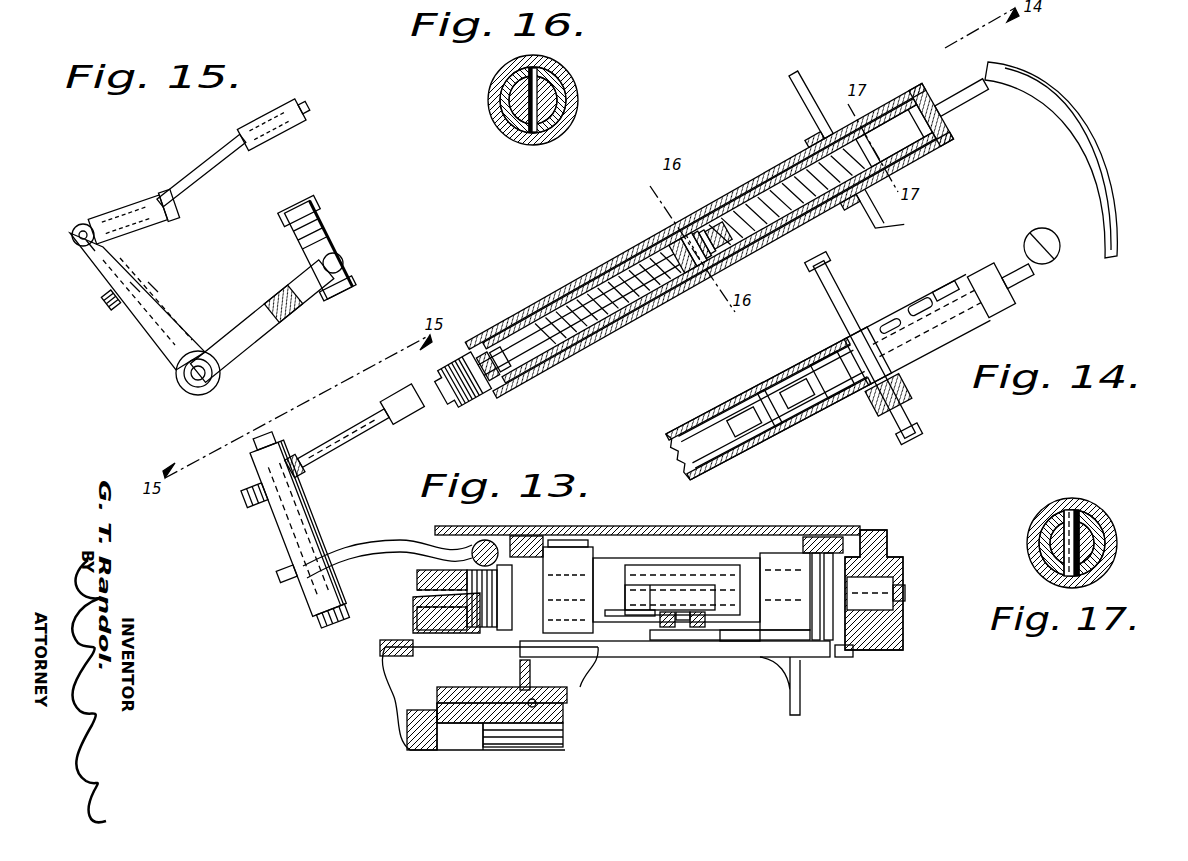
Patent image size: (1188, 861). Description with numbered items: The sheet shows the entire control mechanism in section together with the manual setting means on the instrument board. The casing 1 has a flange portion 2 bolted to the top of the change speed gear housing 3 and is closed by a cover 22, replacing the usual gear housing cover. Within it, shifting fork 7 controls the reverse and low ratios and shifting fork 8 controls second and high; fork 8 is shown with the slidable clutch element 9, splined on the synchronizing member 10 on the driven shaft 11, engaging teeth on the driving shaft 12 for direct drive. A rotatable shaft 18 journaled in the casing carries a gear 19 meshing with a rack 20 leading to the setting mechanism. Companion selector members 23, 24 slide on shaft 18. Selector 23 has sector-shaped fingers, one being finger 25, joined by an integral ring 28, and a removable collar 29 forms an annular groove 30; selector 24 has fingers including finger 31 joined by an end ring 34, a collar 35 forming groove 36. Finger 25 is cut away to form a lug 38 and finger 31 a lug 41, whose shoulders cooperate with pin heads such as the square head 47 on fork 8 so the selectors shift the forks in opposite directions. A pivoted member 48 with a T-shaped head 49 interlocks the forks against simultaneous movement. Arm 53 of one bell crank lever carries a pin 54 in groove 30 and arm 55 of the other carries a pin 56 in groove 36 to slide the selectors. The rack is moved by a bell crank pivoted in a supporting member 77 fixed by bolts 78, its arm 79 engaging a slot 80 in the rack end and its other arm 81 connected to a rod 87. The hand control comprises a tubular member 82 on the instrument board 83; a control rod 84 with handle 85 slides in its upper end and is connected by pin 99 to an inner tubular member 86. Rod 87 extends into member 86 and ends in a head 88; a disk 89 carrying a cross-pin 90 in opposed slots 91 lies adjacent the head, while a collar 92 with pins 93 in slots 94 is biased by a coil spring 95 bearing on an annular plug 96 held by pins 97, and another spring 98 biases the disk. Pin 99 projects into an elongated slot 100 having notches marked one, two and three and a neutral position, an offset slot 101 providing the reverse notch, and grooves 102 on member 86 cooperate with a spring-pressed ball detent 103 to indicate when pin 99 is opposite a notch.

In FIG. 13, the casing 1 is at (885, 545).
In FIG. 13, the flange portion 2 is at (412, 625).
In FIG. 13, the change speed gear housing 3 is at (380, 645).
In FIG. 13, the shifting fork 7 is at (790, 692).
In FIG. 13, the shifting fork 8 is at (533, 688).
In FIG. 13, the slidable clutch element 9 is at (567, 692).
In FIG. 13, the synchronizing member 10 is at (563, 718).
In FIG. 13, the driven shaft 11 is at (563, 742).
In FIG. 13, the driving shaft 12 is at (420, 712).
In FIG. 13, the rotatable shaft 18 is at (905, 593).
In FIG. 13, the gear 19 is at (483, 627).
In FIG. 15, the rack 20 is at (320, 228).
In FIG. 13, the rack 20 is at (508, 538).
In FIG. 13, the cover 22 is at (720, 530).
In FIG. 13, the selector member 23 is at (618, 562).
In FIG. 13, the selector member 24 is at (763, 555).
In FIG. 13, the sector-shaped finger 25 is at (612, 616).
In FIG. 13, the integral ring 28 is at (515, 630).
In FIG. 13, the removable collar 29 is at (560, 540).
In FIG. 13, the annular groove 30 is at (528, 632).
In FIG. 13, the sector-shaped finger 31 is at (748, 640).
In FIG. 13, the integral end ring 34 is at (830, 645).
In FIG. 13, the collar 35 is at (814, 640).
In FIG. 13, the annular groove 36 is at (828, 657).
In FIG. 13, the lug 38 is at (665, 630).
In FIG. 13, the lug 41 is at (655, 575).
In FIG. 13, the square head 47 is at (680, 620).
In FIG. 13, the pivoted member 48 is at (722, 657).
In FIG. 13, the T-shaped head 49 is at (725, 641).
In FIG. 13, the arm 53 is at (562, 550).
In FIG. 13, the pin 54 is at (602, 560).
In FIG. 13, the arm 55 is at (823, 540).
In FIG. 13, the pin 56 is at (858, 533).
In FIG. 15, the supporting member 77 is at (157, 294).
In FIG. 13, the supporting member 77 is at (300, 600).
In FIG. 15, the bolts 78 is at (108, 306).
In FIG. 13, the bolts 78 is at (260, 587).
In FIG. 15, the arm 79 is at (243, 330).
In FIG. 13, the arm 79 is at (388, 540).
In FIG. 15, the slot 80 is at (345, 262).
In FIG. 13, the slot 80 is at (494, 542).
In FIG. 15, the arm 81 is at (163, 323).
In FIG. 13, the arm 81 is at (235, 512).
In FIG. 16, the tubular member 82 is at (570, 85).
In FIG. 17, the tubular member 82 is at (1117, 552).
In FIG. 14, the tubular member 82 is at (668, 297).
In FIG. 14, the instrument board 83 is at (817, 98).
In FIG. 17, the control rod 84 is at (1098, 515).
In FIG. 14, the control rod 84 is at (977, 88).
In FIG. 14, the handle 85 is at (1050, 100).
In FIG. 16, the second tubular member 86 is at (575, 107).
In FIG. 17, the second tubular member 86 is at (1105, 528).
In FIG. 14, the second tubular member 86 is at (548, 318).
In FIG. 15, the rod 87 is at (193, 170).
In FIG. 14, the rod 87 is at (503, 355).
In FIG. 13, the rod 87 is at (335, 447).
In FIG. 14, the head 88 is at (717, 270).
In FIG. 16, the disk 89 is at (548, 78).
In FIG. 14, the disk 89 is at (722, 260).
In FIG. 16, the cross-pin 90 is at (525, 142).
In FIG. 14, the cross-pin 90 is at (697, 228).
In FIG. 14, the slots 91 is at (772, 180).
In FIG. 14, the collar 92 is at (672, 240).
In FIG. 14, the pins 93 is at (703, 262).
In FIG. 14, the slots 94 is at (610, 288).
In FIG. 14, the coil spring 95 is at (588, 345).
In FIG. 14, the annular plug 96 is at (522, 365).
In FIG. 14, the pins 97 is at (545, 365).
In FIG. 14, the spring 98 is at (797, 208).
In FIG. 17, the pin 99 is at (1074, 505).
In FIG. 14, the pin 99 is at (875, 115).
In FIG. 17, the elongated slot 100 is at (1066, 503).
In FIG. 14, the elongated slot 100 is at (925, 305).
In FIG. 14, the offset slot 101 is at (965, 285).
In FIG. 14, the grooves 102 is at (812, 195).
In FIG. 14, the spring-pressed ball detent 103 is at (850, 402).